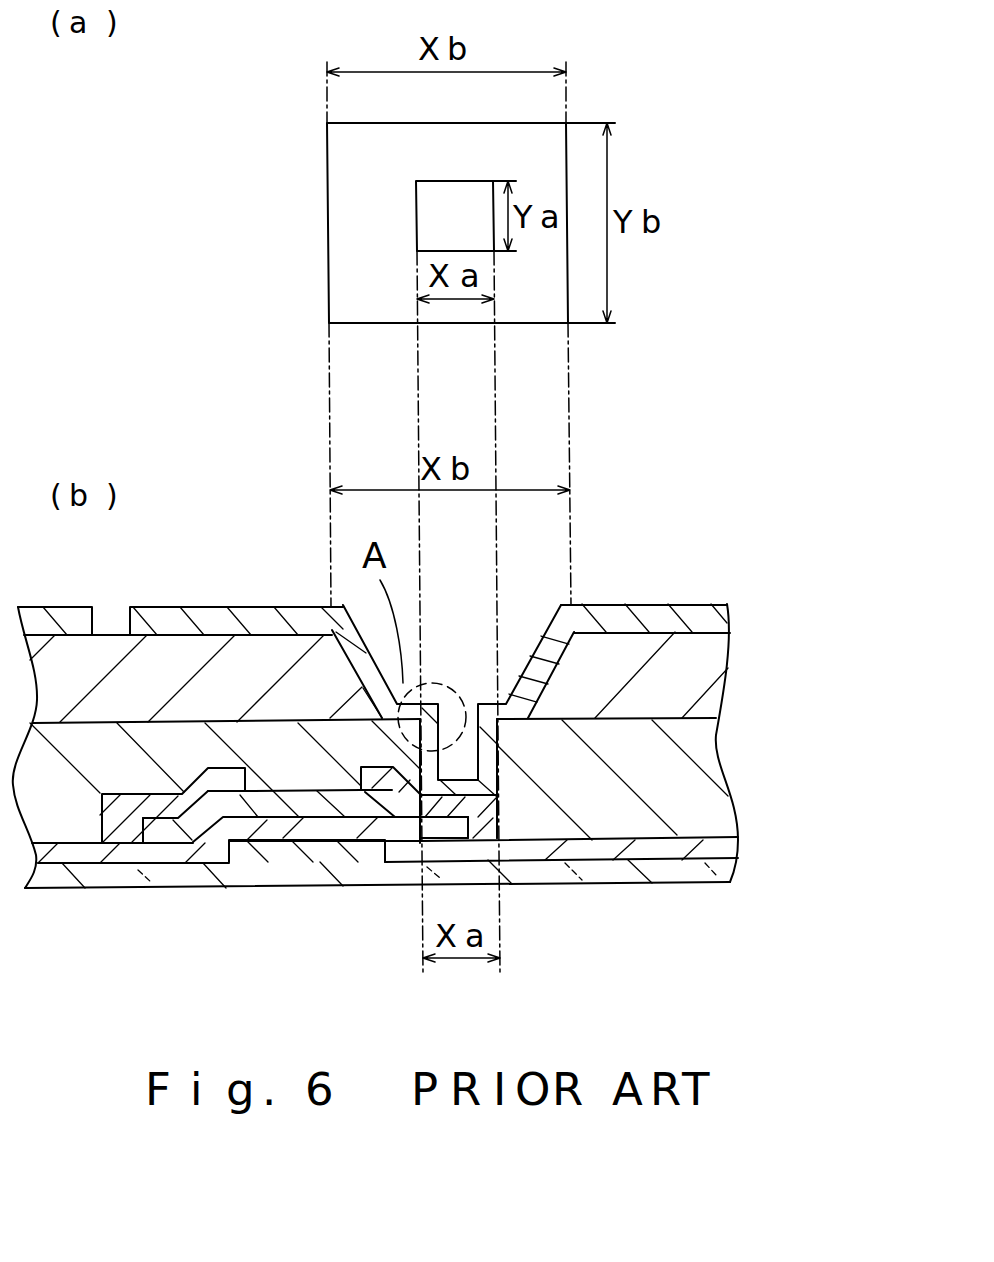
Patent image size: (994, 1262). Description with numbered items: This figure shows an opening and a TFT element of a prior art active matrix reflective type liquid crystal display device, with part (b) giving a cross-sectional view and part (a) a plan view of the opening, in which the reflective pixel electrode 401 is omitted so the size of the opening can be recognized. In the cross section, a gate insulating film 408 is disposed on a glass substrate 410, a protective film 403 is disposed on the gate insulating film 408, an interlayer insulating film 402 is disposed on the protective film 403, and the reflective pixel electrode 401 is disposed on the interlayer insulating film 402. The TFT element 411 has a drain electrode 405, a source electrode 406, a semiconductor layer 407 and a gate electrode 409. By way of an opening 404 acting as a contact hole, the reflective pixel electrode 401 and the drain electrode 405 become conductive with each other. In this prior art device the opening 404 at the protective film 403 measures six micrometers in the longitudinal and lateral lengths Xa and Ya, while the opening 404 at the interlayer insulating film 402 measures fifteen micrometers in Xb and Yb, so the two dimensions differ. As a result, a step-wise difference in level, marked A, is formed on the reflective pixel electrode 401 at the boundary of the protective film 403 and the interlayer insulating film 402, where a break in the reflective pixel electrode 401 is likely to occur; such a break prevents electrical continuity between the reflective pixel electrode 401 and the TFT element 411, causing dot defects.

The reflective pixel electrode 401 is at (448, 663).
The interlayer insulating film 402 is at (703, 680).
The protective film 403 is at (703, 783).
The opening 404 is at (462, 608).
The drain electrode 405 is at (487, 812).
The source electrode 406 is at (125, 828).
The semiconductor layer 407 is at (452, 825).
The gate insulating film 408 is at (703, 848).
The gate electrode 409 is at (262, 855).
The glass substrate 410 is at (703, 875).
The TFT element 411 is at (290, 762).